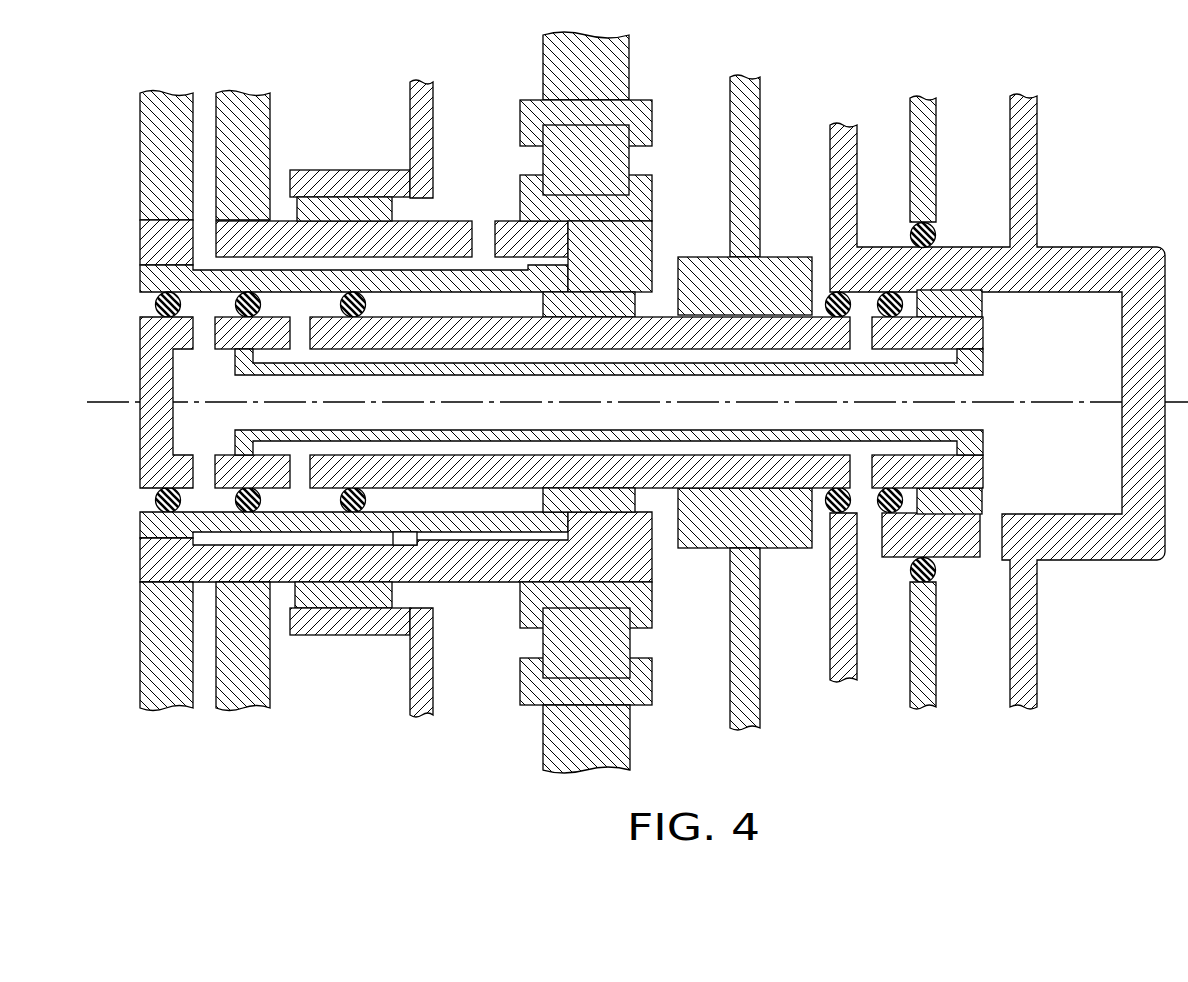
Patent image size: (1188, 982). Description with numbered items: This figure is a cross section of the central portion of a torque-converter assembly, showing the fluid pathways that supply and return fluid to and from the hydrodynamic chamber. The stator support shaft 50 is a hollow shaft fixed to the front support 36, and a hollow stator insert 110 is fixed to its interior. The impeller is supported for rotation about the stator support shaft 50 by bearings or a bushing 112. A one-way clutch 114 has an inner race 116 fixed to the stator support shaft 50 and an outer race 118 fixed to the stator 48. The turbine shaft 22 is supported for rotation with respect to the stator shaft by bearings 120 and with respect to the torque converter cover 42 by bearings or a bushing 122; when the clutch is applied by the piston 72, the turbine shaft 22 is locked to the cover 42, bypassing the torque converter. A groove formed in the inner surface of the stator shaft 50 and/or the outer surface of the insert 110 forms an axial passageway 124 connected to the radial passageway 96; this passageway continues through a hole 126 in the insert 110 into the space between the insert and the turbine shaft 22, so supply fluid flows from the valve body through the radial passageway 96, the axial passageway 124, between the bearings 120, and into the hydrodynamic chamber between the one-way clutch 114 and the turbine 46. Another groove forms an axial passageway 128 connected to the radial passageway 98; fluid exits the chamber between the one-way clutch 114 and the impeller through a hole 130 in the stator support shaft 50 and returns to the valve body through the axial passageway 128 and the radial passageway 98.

The turbine shaft 22 is at (663, 490).
The front support 36 is at (270, 647).
The torque converter cover 42 is at (1038, 130).
The turbine 46 is at (762, 128).
The stator 48 is at (543, 70).
The stator support shaft 50 is at (480, 583).
The piston 72 is at (937, 130).
The radial passageway 96 is at (212, 672).
The radial passageway 98 is at (216, 133).
The stator insert 110 is at (467, 540).
The bushing 112 is at (370, 197).
The one-way clutch 114 is at (651, 157).
The inner race 116 is at (652, 200).
The outer race 118 is at (520, 122).
The bearings 120 is at (590, 503).
The bushing 122 is at (947, 510).
The axial passageway 124 is at (349, 549).
The hole 126 is at (405, 546).
The axial passageway 128 is at (343, 258).
The hole 130 is at (483, 243).